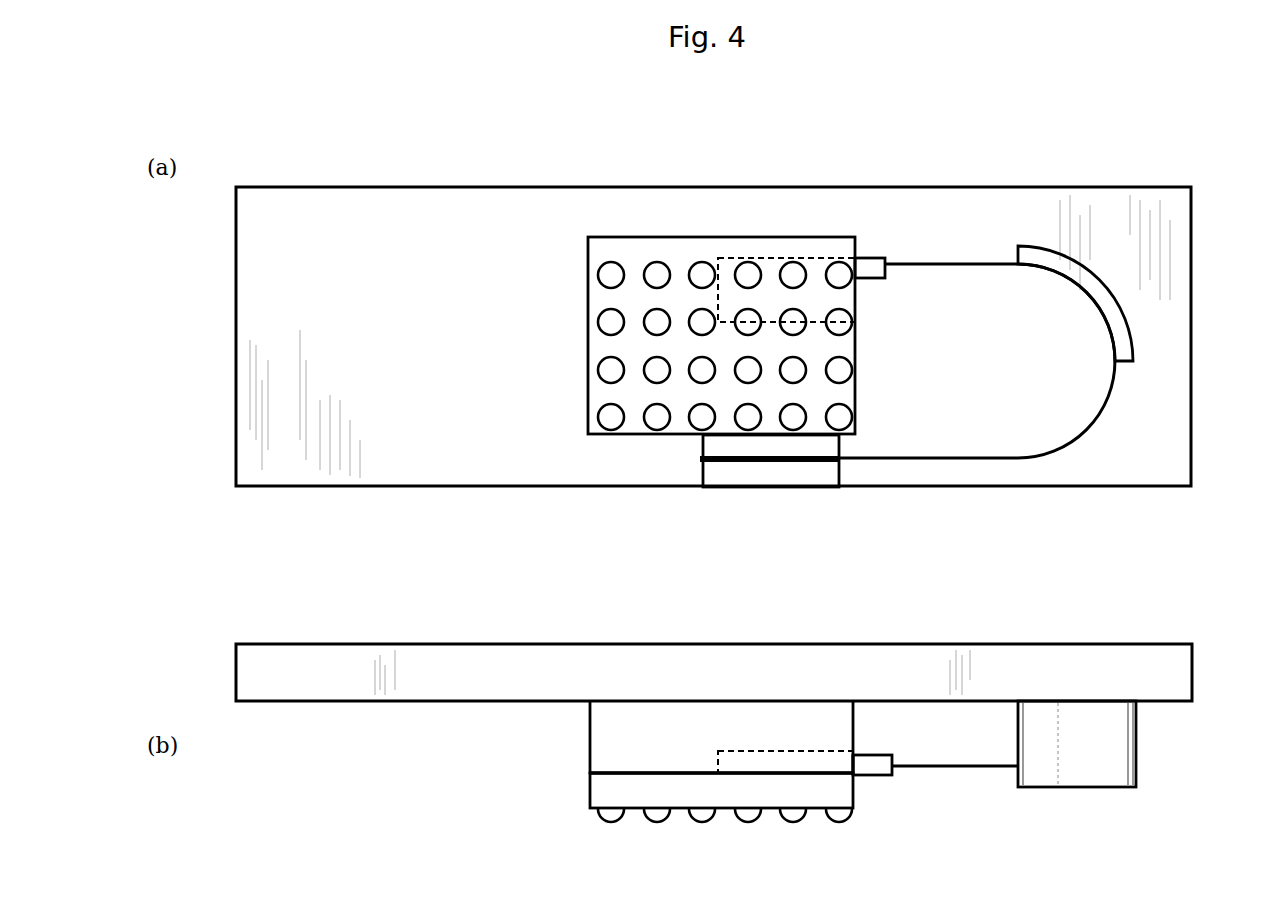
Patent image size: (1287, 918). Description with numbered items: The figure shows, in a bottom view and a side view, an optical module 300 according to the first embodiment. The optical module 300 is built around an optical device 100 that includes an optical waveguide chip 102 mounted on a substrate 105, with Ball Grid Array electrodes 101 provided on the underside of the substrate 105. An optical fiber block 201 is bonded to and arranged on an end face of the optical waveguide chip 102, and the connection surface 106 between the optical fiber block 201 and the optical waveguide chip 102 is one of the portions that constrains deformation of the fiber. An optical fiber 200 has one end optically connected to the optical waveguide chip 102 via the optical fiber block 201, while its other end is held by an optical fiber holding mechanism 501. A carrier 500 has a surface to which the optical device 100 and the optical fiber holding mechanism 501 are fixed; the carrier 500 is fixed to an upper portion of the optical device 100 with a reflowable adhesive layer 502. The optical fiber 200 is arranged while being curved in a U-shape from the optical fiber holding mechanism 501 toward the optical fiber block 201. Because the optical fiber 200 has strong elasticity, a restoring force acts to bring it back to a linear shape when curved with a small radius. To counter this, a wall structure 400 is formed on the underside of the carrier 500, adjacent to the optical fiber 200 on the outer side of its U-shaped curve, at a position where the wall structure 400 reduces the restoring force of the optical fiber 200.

The optical device 100 is at (630, 437).
The Ball Grid Array electrodes 101 is at (606, 268).
The optical waveguide chip 102 is at (767, 255).
The substrate 105 is at (597, 762).
The connection surface 106 is at (857, 765).
The optical fiber 200 is at (1070, 462).
The optical fiber block 201 is at (862, 258).
The optical module 300 is at (318, 130).
The wall structure 400 is at (1118, 305).
The carrier 500 is at (1170, 437).
The optical fiber holding mechanism 501 is at (772, 472).
The reflowable adhesive layer 502 is at (590, 701).